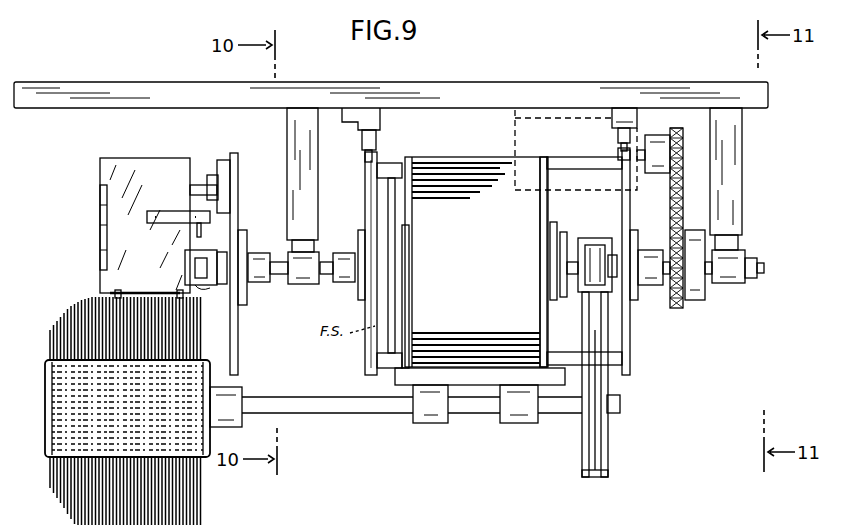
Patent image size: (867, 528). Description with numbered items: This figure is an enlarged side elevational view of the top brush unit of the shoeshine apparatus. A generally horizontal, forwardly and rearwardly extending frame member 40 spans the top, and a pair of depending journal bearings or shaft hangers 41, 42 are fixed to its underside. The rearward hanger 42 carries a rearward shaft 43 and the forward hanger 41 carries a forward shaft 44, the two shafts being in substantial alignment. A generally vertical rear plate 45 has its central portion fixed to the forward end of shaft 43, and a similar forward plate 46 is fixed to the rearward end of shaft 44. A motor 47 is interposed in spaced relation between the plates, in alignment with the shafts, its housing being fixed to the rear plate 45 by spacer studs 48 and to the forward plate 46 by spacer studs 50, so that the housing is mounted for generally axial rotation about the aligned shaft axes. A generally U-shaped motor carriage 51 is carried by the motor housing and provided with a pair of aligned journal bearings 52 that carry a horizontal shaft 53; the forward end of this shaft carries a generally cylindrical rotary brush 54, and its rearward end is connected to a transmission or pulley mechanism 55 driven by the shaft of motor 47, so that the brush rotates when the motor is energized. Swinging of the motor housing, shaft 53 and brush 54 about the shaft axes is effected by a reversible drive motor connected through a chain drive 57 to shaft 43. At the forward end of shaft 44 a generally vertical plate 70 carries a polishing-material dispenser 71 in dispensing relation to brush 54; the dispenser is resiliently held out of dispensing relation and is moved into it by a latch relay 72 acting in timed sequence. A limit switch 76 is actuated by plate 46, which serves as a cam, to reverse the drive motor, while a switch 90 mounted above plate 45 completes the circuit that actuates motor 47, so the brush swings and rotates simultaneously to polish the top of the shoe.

The frame member 40 is at (54, 108).
The forward shaft hanger 41 is at (287, 134).
The rearward shaft hanger 42 is at (738, 173).
The rearward shaft 43 is at (760, 266).
The forward shaft 44 is at (280, 270).
The rear plate 45 is at (630, 336).
The forward plate 46 is at (370, 185).
The motor 47 is at (490, 250).
The spacer studs 48 is at (583, 175).
The spacer studs 50 is at (388, 168).
The motor carriage 51 is at (395, 380).
The journal bearings 52 is at (520, 412).
The shaft 53 is at (278, 397).
The rotary brush 54 is at (75, 312).
The pulley mechanism 55 is at (598, 446).
The chain drive 57 is at (685, 312).
The plate 70 is at (238, 205).
The dispenser 71 is at (147, 170).
The latch relay 72 is at (185, 278).
The limit switch 76 is at (380, 122).
The switch 90 is at (640, 121).